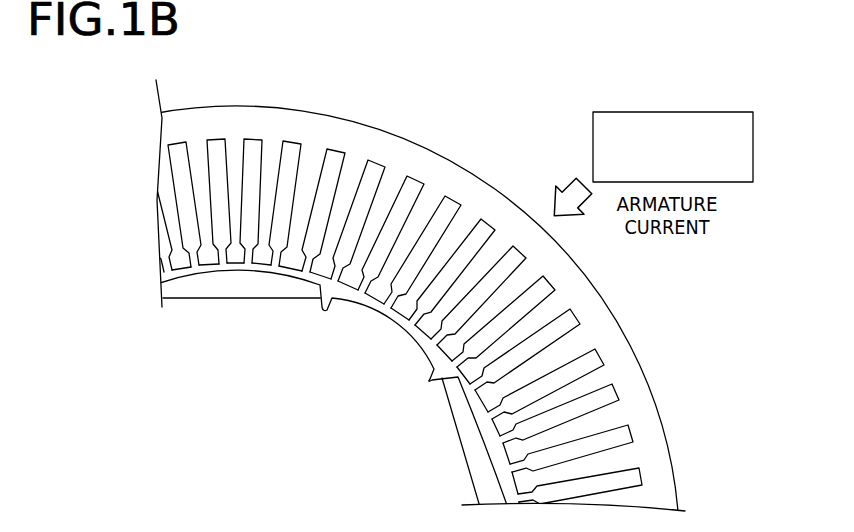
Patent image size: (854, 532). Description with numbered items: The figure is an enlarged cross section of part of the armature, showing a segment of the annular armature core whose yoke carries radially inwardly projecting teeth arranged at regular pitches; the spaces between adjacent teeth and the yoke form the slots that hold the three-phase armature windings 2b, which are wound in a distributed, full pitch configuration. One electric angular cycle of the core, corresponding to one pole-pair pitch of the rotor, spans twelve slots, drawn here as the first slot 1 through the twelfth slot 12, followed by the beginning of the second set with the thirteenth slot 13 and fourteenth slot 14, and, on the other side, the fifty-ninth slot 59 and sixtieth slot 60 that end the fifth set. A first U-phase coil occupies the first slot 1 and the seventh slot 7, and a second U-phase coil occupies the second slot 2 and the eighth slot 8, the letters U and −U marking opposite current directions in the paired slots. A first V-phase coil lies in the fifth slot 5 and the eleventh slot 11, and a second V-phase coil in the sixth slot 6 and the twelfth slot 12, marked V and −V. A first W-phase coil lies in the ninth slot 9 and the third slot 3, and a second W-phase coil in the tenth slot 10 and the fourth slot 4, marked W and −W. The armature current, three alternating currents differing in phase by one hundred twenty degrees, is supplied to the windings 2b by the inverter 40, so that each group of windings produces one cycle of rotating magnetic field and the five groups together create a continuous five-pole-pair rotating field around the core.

The three-phase armature windings 2b is at (504, 175).
The inverter 40 is at (674, 111).
The first slot 1 is at (559, 413).
The second slot 2 is at (546, 384).
The third slot 3 is at (525, 349).
The fourth slot 4 is at (503, 321).
The fifth slot 5 is at (478, 295).
The sixth slot 6 is at (452, 272).
The seventh slot 7 is at (422, 252).
The eighth slot 8 is at (391, 234).
The ninth slot 9 is at (358, 220).
The tenth slot 10 is at (323, 210).
The eleventh slot 11 is at (285, 203).
The twelfth slot 12 is at (251, 201).
The thirteenth slot 13 is at (219, 201).
The fourteenth slot 14 is at (184, 204).
The fifty-ninth slot 59 is at (580, 486).
The sixtieth slot 60 is at (571, 448).